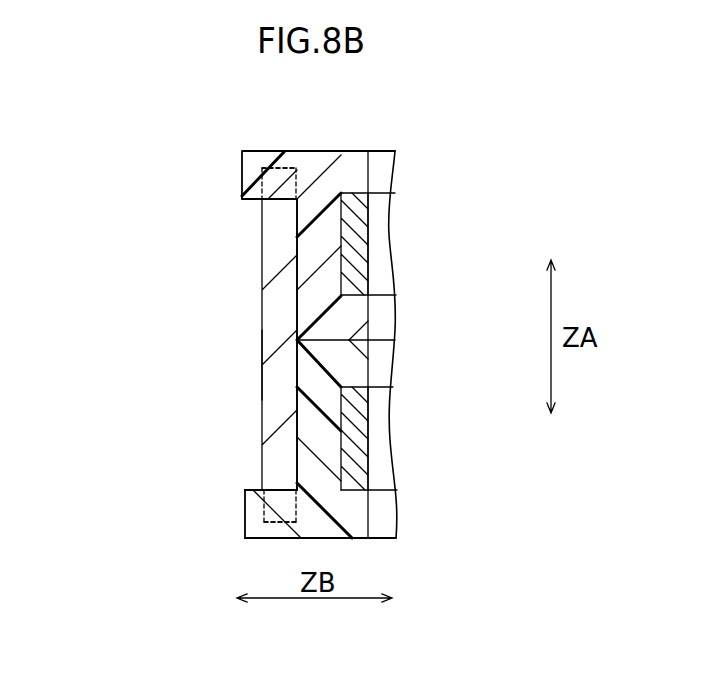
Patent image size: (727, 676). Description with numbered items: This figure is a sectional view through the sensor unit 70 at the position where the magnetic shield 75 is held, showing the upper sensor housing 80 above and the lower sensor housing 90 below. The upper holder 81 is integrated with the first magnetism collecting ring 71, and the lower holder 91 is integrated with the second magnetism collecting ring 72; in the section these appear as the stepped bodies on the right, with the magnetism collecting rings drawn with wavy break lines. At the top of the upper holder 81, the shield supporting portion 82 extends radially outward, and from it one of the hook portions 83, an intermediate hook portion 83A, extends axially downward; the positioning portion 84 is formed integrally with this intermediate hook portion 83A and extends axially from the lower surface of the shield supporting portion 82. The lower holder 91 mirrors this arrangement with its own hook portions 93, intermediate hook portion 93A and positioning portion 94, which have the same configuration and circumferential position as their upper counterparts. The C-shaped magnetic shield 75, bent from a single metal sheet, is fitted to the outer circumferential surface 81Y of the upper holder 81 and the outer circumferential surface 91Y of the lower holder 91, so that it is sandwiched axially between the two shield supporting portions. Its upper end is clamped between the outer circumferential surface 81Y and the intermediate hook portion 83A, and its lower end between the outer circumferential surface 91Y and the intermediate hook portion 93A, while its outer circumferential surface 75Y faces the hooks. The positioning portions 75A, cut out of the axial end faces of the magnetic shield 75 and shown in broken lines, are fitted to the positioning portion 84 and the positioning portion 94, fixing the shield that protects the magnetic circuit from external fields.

The sensor unit 70 is at (119, 138).
The upper sensor housing 80 is at (388, 129).
The upper holder 81 is at (365, 165).
The outer circumferential surface of the upper holder 81Y is at (276, 257).
The shield supporting portion 82 is at (270, 151).
The hook portions 83 is at (145, 174).
The intermediate hook portion 83A is at (260, 178).
The positioning portion 84 is at (274, 198).
The first magnetism collecting ring 71 is at (388, 238).
The second magnetism collecting ring 72 is at (388, 440).
The magnetic shield 75 is at (262, 336).
The positioning portion 75A is at (288, 167).
The outer circumferential surface of the magnetic shield 75Y is at (264, 370).
The lower sensor housing 90 is at (402, 551).
The lower holder 91 is at (362, 520).
The outer circumferential surface of the lower holder 91Y is at (296, 398).
The hook portions 93 is at (145, 518).
The intermediate hook portion 93A is at (263, 515).
The positioning portion 94 is at (278, 490).